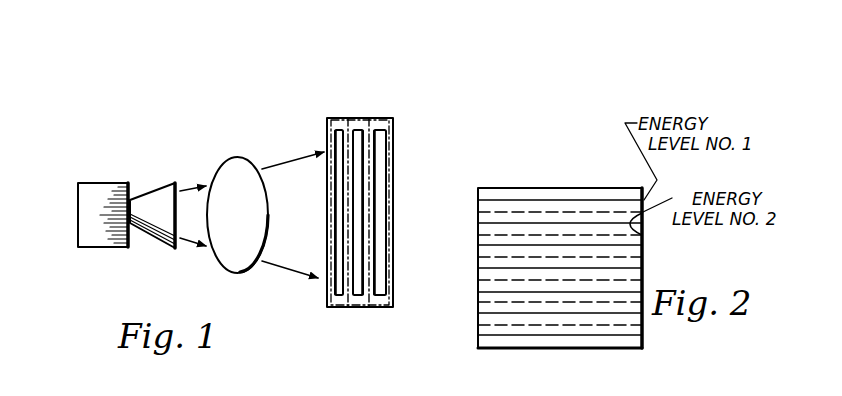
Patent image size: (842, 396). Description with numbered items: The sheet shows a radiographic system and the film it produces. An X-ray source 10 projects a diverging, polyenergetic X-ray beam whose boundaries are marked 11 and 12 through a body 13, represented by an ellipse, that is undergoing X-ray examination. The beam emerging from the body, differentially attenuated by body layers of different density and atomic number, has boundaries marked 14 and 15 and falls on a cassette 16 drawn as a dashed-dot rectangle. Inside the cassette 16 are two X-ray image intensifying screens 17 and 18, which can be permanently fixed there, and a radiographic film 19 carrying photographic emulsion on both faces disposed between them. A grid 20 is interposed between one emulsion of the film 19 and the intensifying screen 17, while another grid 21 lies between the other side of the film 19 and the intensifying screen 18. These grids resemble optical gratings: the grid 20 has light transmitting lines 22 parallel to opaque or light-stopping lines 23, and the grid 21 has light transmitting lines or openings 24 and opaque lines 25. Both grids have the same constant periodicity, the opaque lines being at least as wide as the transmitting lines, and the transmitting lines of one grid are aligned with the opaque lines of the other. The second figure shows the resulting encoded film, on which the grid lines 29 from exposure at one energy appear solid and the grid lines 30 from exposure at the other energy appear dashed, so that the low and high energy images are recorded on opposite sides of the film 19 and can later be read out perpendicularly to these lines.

In FIG. 1, the X-ray source 10 is at (85, 211).
In FIG. 1, the beam boundary 11 is at (193, 187).
In FIG. 1, the beam boundary 12 is at (200, 240).
In FIG. 1, the body 13 is at (240, 237).
In FIG. 1, the emergent beam boundary 14 is at (286, 161).
In FIG. 1, the emergent beam boundary 15 is at (270, 270).
In FIG. 1, the cassette 16 is at (395, 150).
In FIG. 1, the X-ray image intensifying screen 17 is at (338, 129).
In FIG. 1, the X-ray image intensifying screen 18 is at (381, 128).
In FIG. 1, the radiographic film 19 is at (358, 128).
In FIG. 2, the radiographic film 19 is at (607, 189).
In FIG. 1, the grid 20 is at (350, 128).
In FIG. 1, the grid 21 is at (370, 128).
In FIG. 1, the light transmitting lines 22 is at (348, 238).
In FIG. 1, the opaque lines 23 is at (343, 285).
In FIG. 1, the light transmitting lines 24 is at (372, 212).
In FIG. 1, the opaque lines 25 is at (370, 180).
In FIG. 2, the grid lines 29 is at (547, 199).
In FIG. 2, the grid lines 30 is at (642, 240).